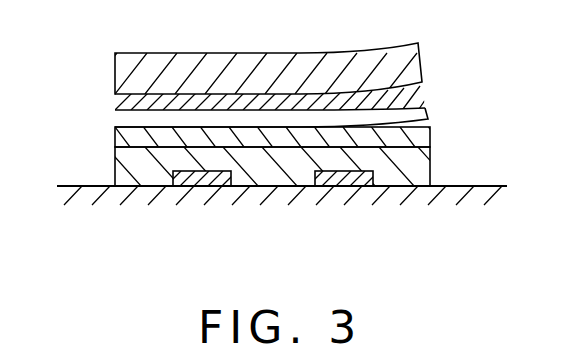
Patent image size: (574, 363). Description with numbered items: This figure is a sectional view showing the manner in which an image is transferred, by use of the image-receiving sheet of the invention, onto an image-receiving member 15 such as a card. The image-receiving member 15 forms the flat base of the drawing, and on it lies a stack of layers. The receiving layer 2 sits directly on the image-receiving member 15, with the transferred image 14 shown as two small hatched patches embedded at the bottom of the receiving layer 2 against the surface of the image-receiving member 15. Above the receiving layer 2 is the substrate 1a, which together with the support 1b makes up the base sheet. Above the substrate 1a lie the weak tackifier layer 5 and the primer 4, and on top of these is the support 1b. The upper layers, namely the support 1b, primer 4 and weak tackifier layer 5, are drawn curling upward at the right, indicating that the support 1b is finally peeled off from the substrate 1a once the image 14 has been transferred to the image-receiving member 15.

The substrate 1a is at (421, 133).
The support 1b is at (420, 59).
The receiving layer 2 is at (422, 163).
The primer 4 is at (421, 84).
The weak tackifier layer 5 is at (421, 110).
The image 14 is at (205, 186).
The image-receiving member 15 is at (100, 187).